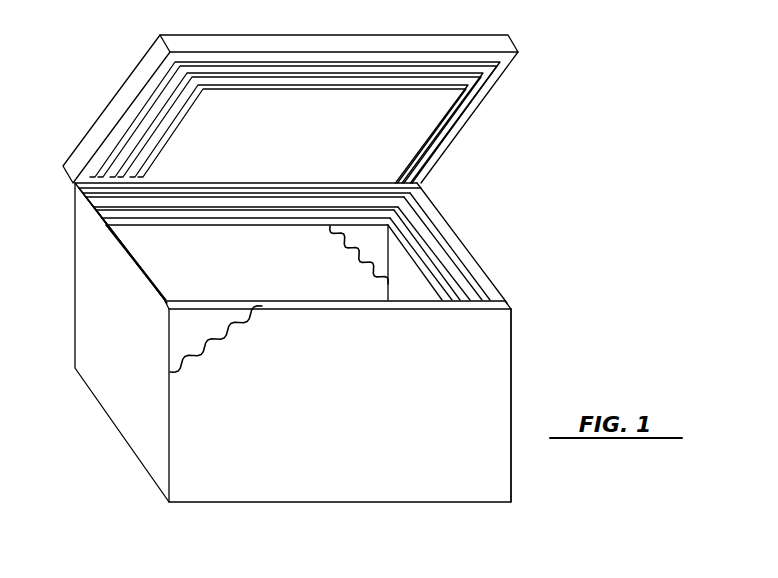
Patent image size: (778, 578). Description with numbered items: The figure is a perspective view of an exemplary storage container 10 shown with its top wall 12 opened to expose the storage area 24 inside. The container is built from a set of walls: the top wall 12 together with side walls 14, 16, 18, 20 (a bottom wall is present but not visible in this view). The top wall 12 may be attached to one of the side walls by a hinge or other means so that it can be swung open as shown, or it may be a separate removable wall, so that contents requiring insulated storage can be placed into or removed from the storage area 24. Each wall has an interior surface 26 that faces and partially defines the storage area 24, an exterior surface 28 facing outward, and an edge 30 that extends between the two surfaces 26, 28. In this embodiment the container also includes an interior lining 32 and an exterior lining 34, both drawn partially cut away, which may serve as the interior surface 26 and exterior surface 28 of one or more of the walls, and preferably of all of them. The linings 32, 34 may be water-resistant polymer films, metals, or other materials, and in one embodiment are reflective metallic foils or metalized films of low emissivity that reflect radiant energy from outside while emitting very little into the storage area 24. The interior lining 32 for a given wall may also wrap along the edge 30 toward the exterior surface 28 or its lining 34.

The storage container 10 is at (575, 153).
The top wall 12 is at (138, 82).
The side wall 14 is at (95, 237).
The side wall 16 is at (197, 332).
The side wall 18 is at (487, 273).
The side wall 20 is at (377, 248).
The storage area 24 is at (382, 284).
The interior surface 26 is at (167, 238).
The exterior surface 28 is at (482, 337).
The edge 30 is at (383, 203).
The interior lining 32 is at (352, 230).
The exterior lining 34 is at (169, 368).